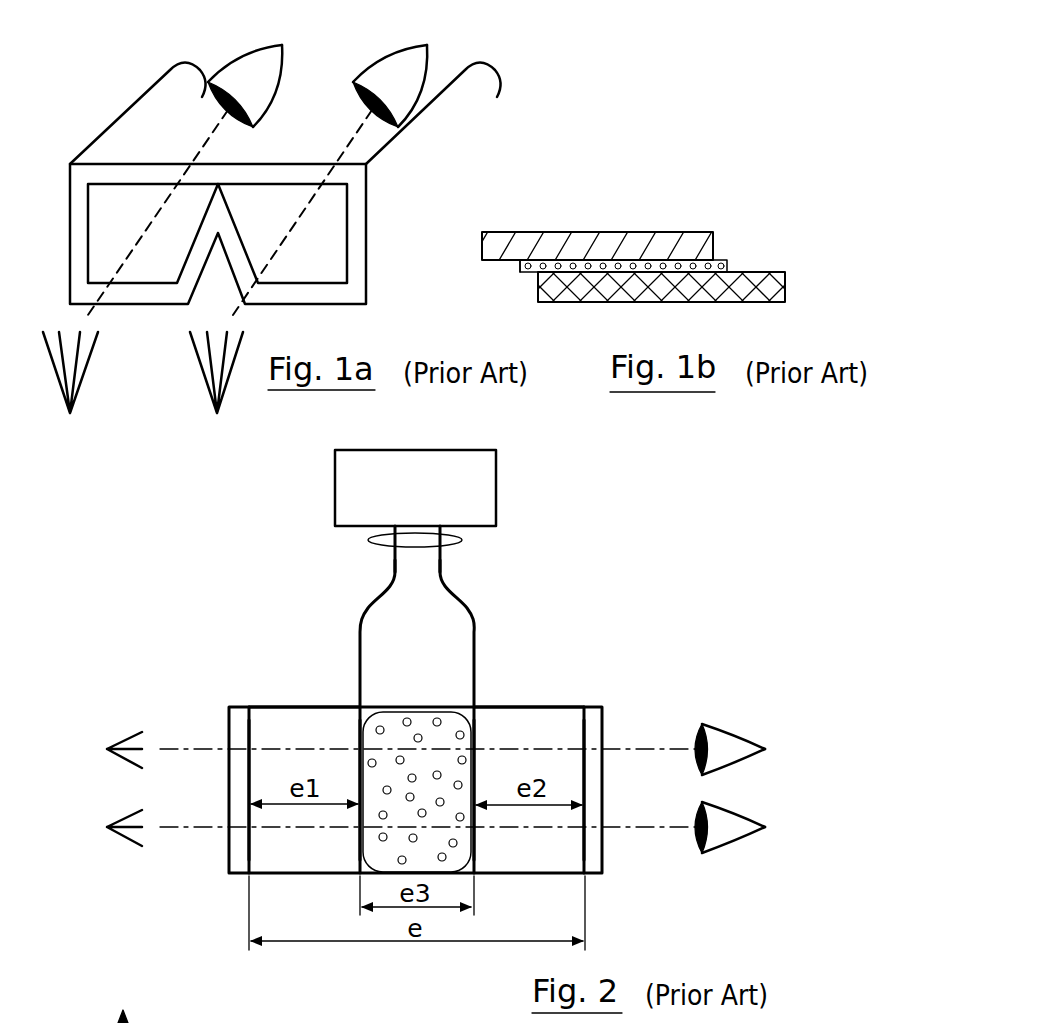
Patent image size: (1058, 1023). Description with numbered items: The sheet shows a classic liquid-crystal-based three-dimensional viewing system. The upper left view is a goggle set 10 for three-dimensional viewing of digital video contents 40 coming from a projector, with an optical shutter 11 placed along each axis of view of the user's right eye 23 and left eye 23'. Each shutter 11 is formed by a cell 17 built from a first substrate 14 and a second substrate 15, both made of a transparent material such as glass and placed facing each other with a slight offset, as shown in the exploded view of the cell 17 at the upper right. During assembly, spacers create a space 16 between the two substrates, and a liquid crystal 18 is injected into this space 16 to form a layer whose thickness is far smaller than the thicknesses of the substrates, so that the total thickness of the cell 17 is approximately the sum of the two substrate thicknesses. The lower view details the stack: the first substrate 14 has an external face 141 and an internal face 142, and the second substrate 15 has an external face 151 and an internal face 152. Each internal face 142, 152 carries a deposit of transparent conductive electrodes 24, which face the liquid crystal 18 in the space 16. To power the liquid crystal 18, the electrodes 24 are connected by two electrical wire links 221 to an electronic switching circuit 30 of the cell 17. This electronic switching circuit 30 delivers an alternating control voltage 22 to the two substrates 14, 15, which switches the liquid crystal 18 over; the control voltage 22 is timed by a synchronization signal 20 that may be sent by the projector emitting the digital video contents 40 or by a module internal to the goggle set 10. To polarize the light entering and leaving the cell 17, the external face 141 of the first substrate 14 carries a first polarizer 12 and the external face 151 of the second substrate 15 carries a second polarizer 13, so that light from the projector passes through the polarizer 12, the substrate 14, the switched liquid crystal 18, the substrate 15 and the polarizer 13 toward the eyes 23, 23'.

In FIG. 1a, the goggle set 10 is at (307, 72).
In FIG. 1a, the optical shutter 11 is at (85, 218).
In FIG. 2, the optical shutter 11 is at (427, 760).
In FIG. 2, the first polarizer 12 is at (238, 878).
In FIG. 2, the second polarizer 13 is at (597, 876).
In FIG. 1b, the first substrate 14 is at (520, 231).
In FIG. 2, the first substrate 14 is at (245, 769).
In FIG. 2, the external face of first substrate 141 is at (256, 855).
In FIG. 2, the internal face of first substrate 142 is at (313, 707).
In FIG. 1b, the second substrate 15 is at (797, 271).
In FIG. 2, the second substrate 15 is at (545, 752).
In FIG. 2, the external face of second substrate 151 is at (580, 847).
In FIG. 2, the internal face of second substrate 152 is at (478, 728).
In FIG. 1b, the space 16 is at (721, 234).
In FIG. 2, the space 16 is at (422, 697).
In FIG. 1b, the cell 17 is at (614, 201).
In FIG. 2, the cell 17 is at (396, 693).
In FIG. 1b, the liquid crystal 18 is at (520, 267).
In FIG. 2, the liquid crystal 18 is at (377, 707).
In FIG. 2, the synchronization signal 20 is at (443, 497).
In FIG. 2, the control voltage 22 is at (396, 545).
In FIG. 2, the electrical wire links 221 is at (540, 527).
In FIG. 1a, the right eye 23 is at (170, 172).
In FIG. 2, the right eye 23 is at (730, 679).
In FIG. 1a, the left eye 23' is at (397, 163).
In FIG. 2, the left eye 23' is at (731, 872).
In FIG. 2, the transparent conductive electrodes 24 is at (343, 860).
In FIG. 2, the electronic switching circuit 30 is at (357, 490).
In FIG. 1a, the digital video contents 40 is at (82, 380).
In FIG. 2, the digital video contents 40 is at (92, 828).